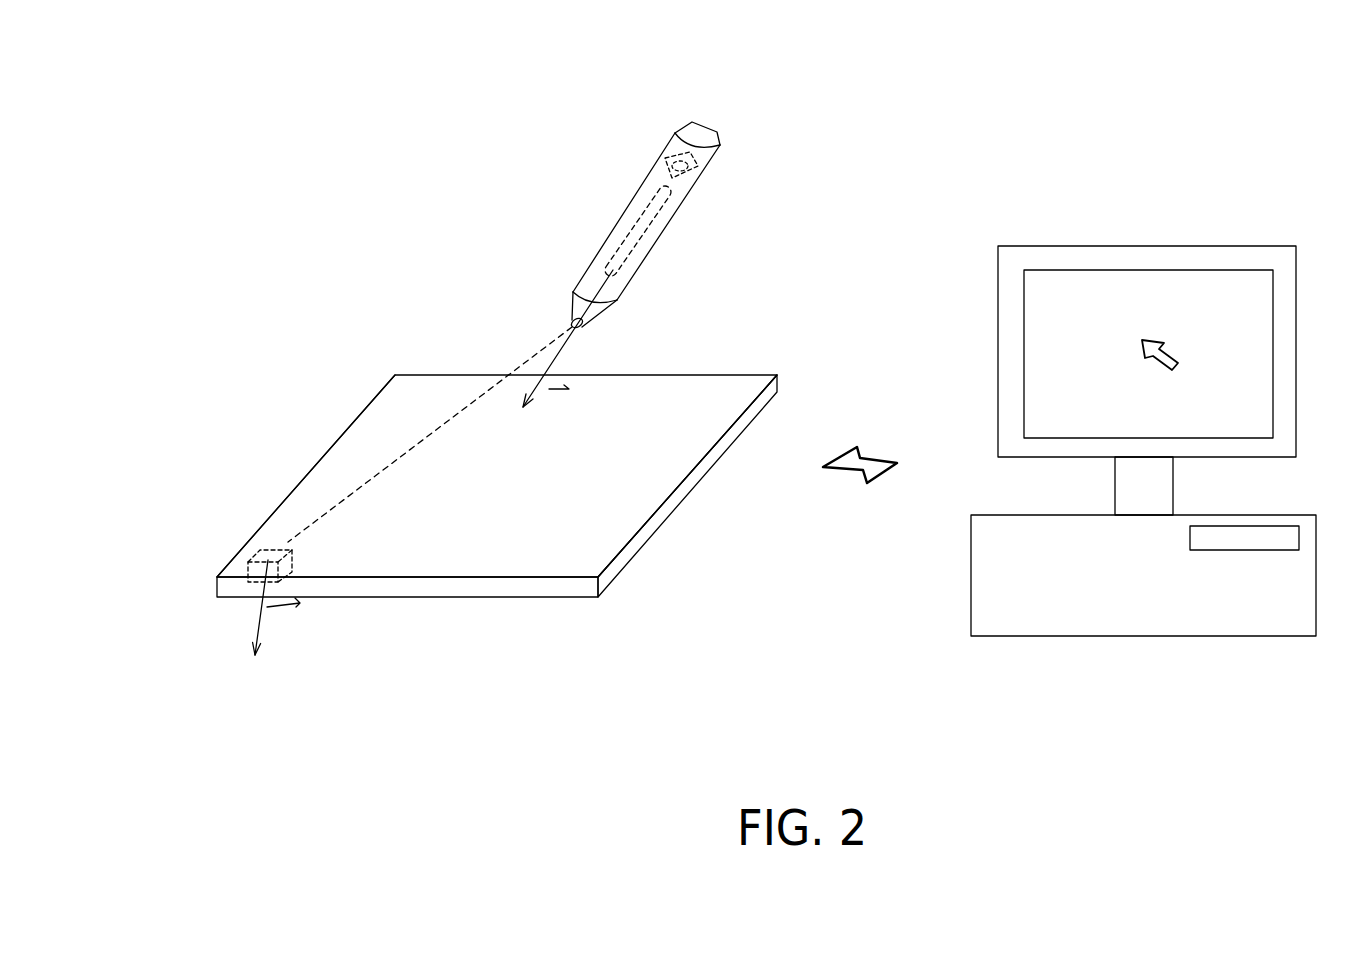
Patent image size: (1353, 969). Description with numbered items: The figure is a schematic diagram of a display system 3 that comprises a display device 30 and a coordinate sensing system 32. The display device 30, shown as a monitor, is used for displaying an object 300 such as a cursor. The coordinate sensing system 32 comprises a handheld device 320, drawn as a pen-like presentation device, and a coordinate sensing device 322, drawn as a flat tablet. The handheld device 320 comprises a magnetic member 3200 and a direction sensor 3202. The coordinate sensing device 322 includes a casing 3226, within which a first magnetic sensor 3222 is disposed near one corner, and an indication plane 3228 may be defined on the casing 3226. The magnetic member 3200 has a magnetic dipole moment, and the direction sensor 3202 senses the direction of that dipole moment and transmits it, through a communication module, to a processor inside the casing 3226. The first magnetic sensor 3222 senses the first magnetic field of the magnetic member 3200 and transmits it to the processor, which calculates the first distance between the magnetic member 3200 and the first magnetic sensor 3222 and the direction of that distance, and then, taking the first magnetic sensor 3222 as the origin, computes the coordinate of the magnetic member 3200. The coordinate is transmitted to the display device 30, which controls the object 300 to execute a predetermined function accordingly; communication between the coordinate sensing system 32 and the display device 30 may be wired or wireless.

The display system 3 is at (966, 118).
The display device 30 is at (1239, 249).
The object 300 is at (1178, 356).
The coordinate sensing system 32 is at (488, 162).
The handheld device 320 is at (535, 219).
The magnetic member 3200 is at (642, 215).
The direction sensor 3202 is at (667, 161).
The coordinate sensing device 322 is at (426, 309).
The first magnetic sensor 3222 is at (255, 562).
The casing 3226 is at (318, 460).
The indication plane 3228 is at (670, 462).